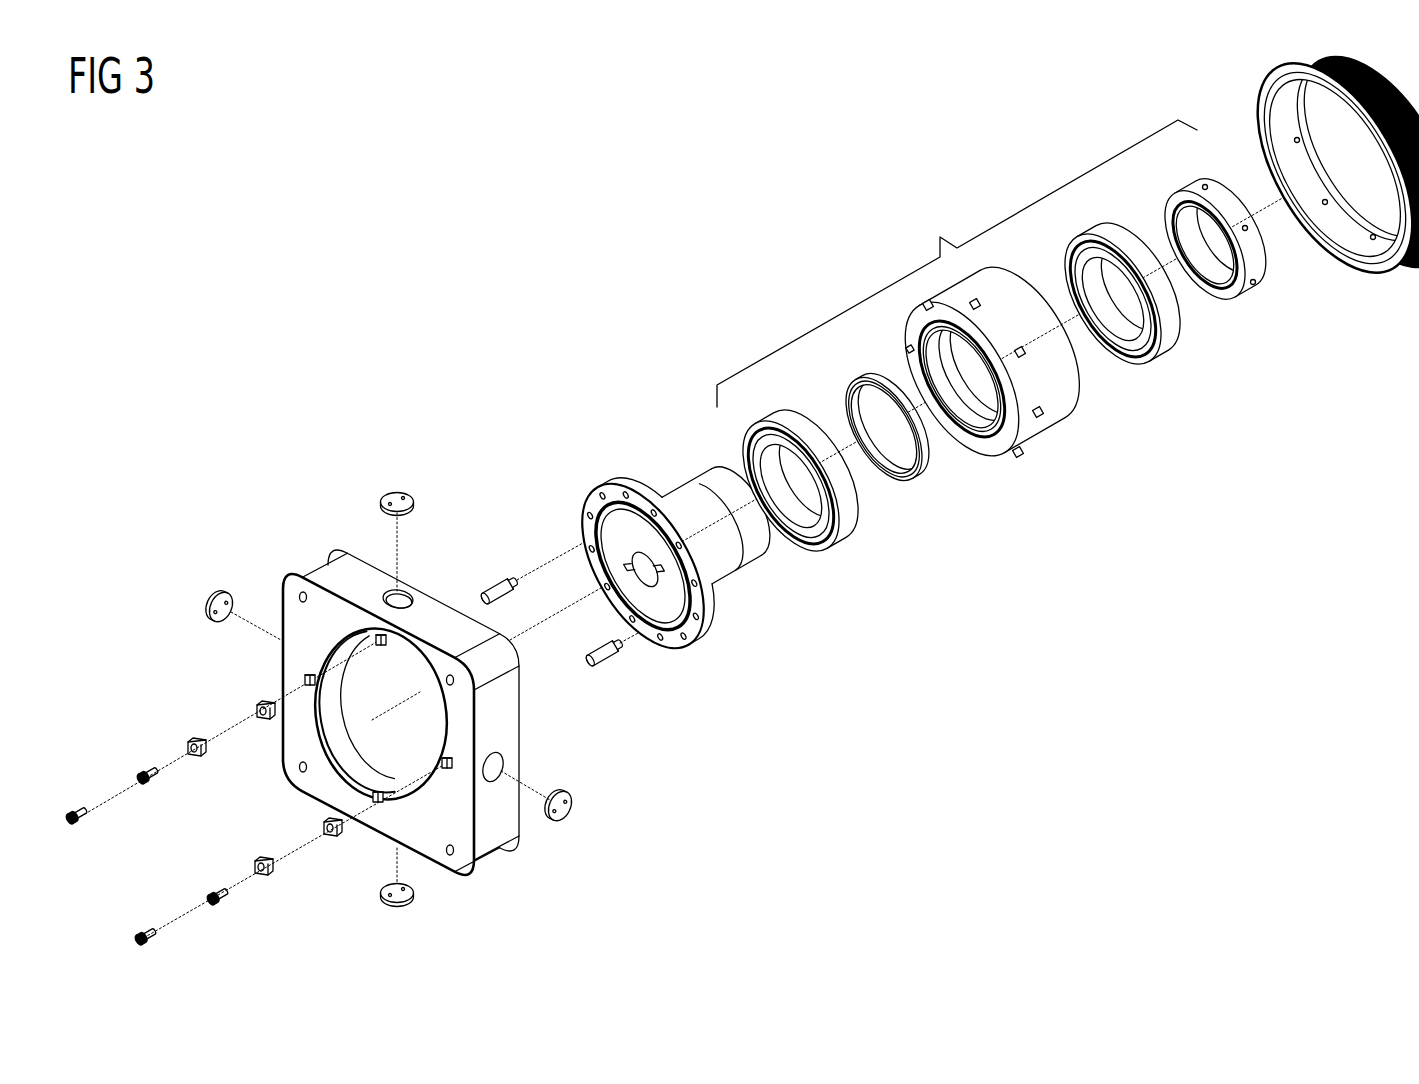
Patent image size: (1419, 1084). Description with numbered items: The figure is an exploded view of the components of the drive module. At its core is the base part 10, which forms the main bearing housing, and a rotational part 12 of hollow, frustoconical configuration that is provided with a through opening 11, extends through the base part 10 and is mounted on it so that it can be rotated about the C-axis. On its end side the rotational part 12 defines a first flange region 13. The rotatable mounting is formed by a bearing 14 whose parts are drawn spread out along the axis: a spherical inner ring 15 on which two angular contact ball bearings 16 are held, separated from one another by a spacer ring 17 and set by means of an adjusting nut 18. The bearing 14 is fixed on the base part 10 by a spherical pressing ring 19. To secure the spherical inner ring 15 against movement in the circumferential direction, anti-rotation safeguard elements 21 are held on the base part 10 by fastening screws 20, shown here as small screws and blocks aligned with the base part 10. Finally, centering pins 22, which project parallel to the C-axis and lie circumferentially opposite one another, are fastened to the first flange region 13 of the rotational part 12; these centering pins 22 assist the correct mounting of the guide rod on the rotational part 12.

The base part 10 is at (341, 563).
The through opening 11 is at (638, 584).
The rotational part 12 is at (724, 557).
The first flange region 13 is at (594, 514).
The bearing 14 is at (957, 263).
The spherical inner ring 15 is at (1060, 411).
The angular contact ball bearings 16 is at (852, 514).
The spacer ring 17 is at (922, 468).
The adjusting nut 18 is at (1257, 264).
The spherical pressing ring 19 is at (1260, 110).
The fastening screws 20 is at (80, 818).
The anti-rotation safeguard elements 21 is at (253, 705).
The centering pins 22 is at (497, 588).